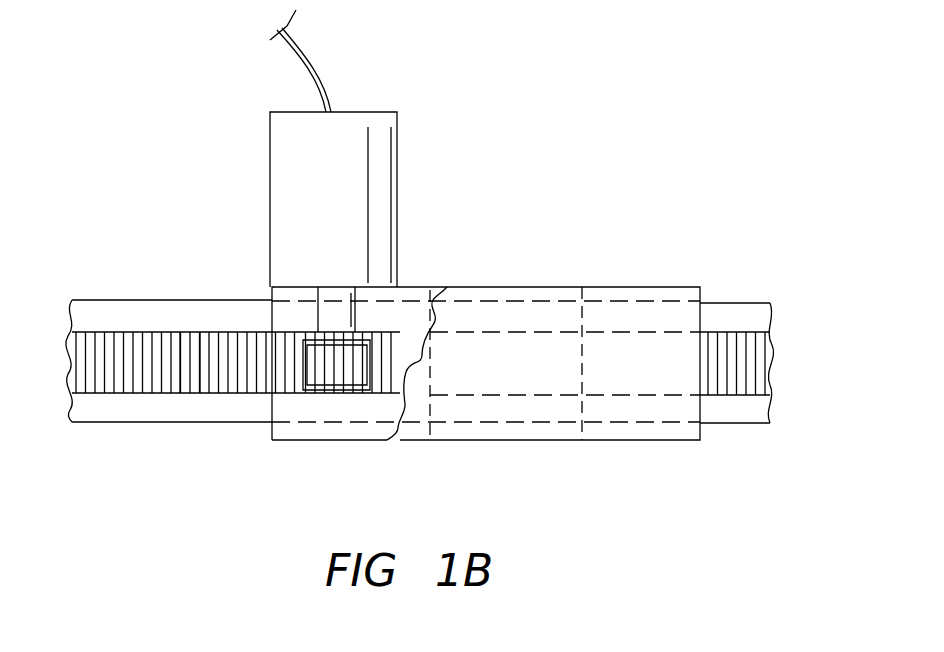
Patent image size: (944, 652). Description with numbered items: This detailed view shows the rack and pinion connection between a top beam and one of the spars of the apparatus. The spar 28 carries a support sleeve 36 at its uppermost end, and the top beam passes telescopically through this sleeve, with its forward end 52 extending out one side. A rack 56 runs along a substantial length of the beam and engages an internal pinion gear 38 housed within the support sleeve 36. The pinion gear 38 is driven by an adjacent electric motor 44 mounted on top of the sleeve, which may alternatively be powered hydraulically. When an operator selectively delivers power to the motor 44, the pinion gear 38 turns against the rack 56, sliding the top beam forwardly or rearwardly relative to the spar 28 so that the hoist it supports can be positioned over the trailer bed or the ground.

The spar 28 is at (582, 365).
The support sleeve 36 is at (480, 440).
The pinion gear 38 is at (318, 368).
The electric motor 44 is at (397, 144).
The forward end 52 is at (117, 422).
The rack 56 is at (192, 383).